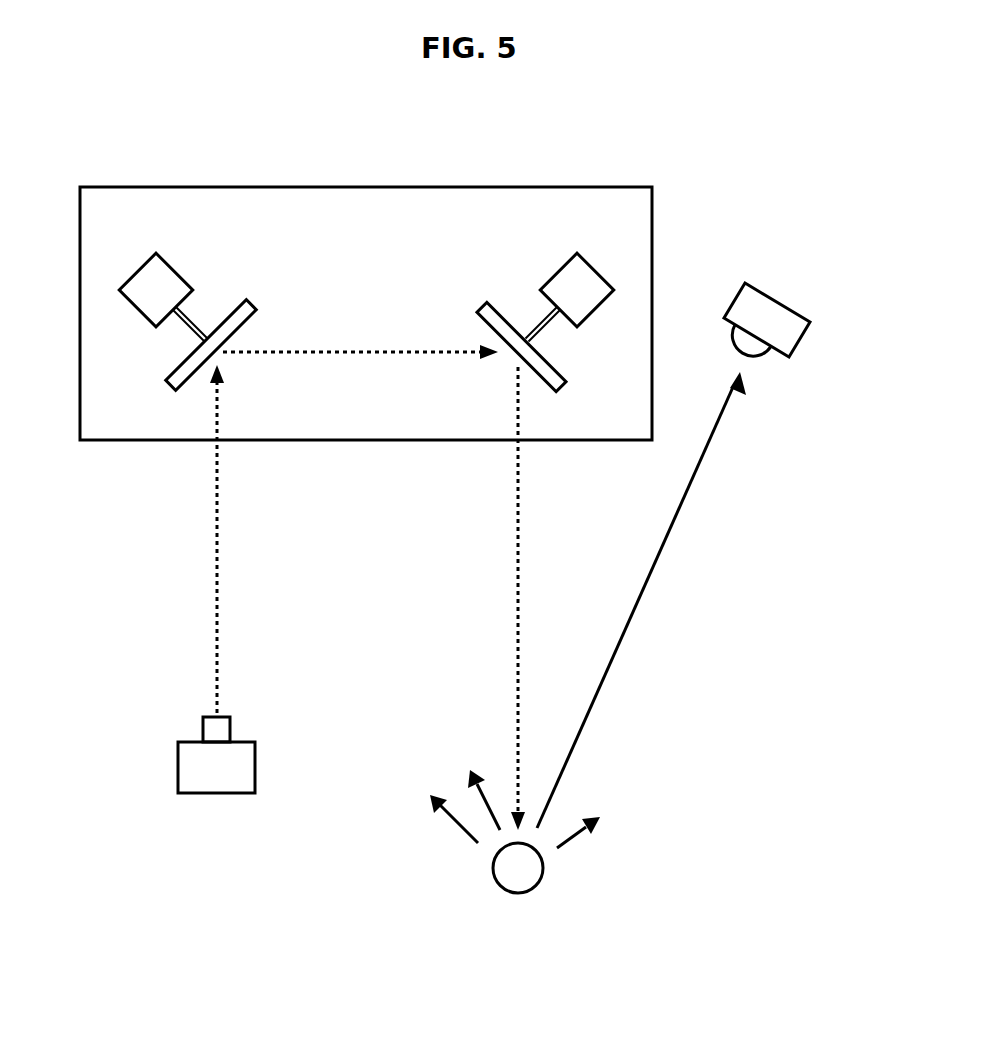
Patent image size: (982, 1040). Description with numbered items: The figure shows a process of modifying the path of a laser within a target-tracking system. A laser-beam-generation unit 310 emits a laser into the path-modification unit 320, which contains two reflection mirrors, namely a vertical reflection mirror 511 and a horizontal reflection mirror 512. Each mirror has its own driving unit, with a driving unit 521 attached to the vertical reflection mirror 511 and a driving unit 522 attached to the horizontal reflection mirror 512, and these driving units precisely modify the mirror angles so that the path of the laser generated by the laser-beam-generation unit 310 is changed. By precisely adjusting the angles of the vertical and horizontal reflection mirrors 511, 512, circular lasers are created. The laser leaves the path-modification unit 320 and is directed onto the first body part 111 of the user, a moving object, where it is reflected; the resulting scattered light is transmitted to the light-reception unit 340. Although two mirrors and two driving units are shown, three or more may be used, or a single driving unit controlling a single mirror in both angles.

The path-modification unit 320 is at (372, 187).
The driving unit 521 is at (181, 273).
The reflection mirror 511 is at (252, 304).
The driving unit 522 is at (557, 273).
The reflection mirror 512 is at (487, 302).
The light-reception unit 340 is at (777, 298).
The laser-beam-generation unit 310 is at (212, 795).
The first body part 111 is at (510, 893).